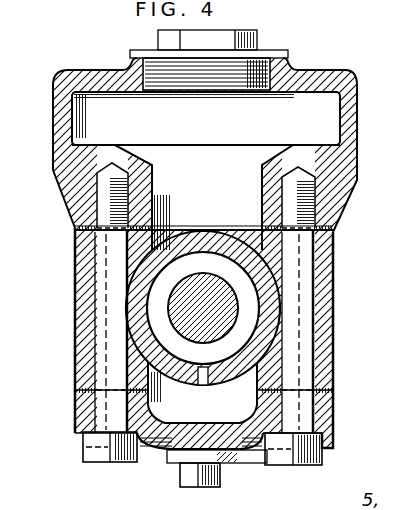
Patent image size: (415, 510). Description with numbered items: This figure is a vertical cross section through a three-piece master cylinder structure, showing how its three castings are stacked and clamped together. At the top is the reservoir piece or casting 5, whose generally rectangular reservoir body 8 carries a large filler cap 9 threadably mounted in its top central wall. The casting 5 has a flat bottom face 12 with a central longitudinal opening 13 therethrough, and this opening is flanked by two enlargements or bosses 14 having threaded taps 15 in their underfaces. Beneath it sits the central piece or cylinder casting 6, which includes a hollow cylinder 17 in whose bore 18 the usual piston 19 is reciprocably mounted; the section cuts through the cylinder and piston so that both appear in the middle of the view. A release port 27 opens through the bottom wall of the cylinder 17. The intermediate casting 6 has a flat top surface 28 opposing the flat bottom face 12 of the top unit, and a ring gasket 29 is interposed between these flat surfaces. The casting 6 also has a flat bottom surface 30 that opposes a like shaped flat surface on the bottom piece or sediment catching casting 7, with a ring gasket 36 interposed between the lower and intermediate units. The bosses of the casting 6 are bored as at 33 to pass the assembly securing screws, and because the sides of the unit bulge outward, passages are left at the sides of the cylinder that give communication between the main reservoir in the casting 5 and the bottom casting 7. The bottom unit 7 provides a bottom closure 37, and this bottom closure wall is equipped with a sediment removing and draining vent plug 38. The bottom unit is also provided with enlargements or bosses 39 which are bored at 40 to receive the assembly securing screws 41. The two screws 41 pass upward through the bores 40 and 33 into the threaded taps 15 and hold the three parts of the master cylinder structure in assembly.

The top main body or reservoir piece or casting 5 is at (362, 133).
The central piece or cylinder casting 6 is at (338, 310).
The bottom piece or sediment catching casting 7 is at (338, 424).
The reservoir body 8 is at (357, 86).
The filler cap 9 is at (243, 53).
The flat bottom face 12 is at (96, 227).
The central longitudinal opening 13 is at (234, 214).
The enlargements or bosses 14 is at (268, 164).
The threaded taps 15 is at (97, 180).
The hollow cylinder 17 is at (192, 232).
The bore 18 is at (252, 343).
The piston 19 is at (230, 296).
The release port 27 is at (202, 390).
The flat top surface 28 is at (88, 231).
The ring gasket 29 is at (77, 229).
The flat bottom surface 30 is at (318, 390).
The bore 33 is at (93, 331).
The ring gasket 36 is at (300, 393).
The bottom closure 37 is at (157, 447).
The sediment removing and draining vent plug 38 is at (185, 470).
The enlargements or bosses 39 is at (262, 405).
The bore 40 is at (88, 418).
The assembly securing screws 41 is at (110, 418).